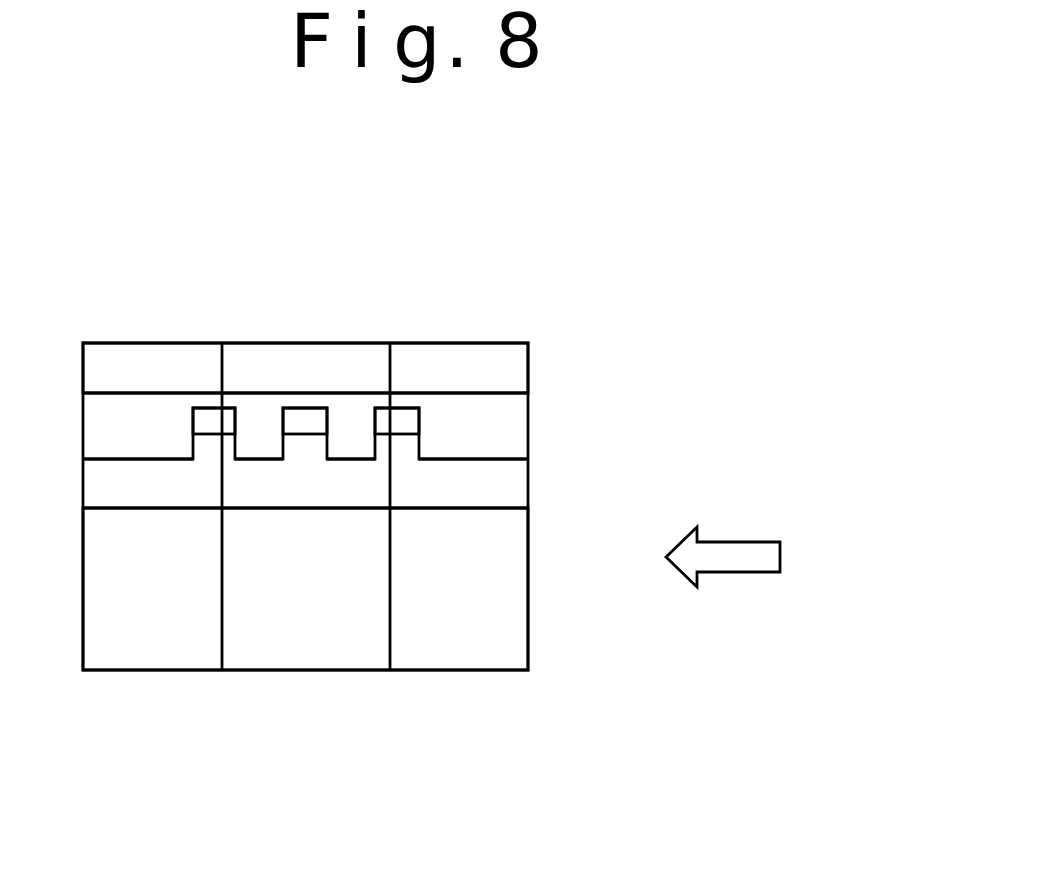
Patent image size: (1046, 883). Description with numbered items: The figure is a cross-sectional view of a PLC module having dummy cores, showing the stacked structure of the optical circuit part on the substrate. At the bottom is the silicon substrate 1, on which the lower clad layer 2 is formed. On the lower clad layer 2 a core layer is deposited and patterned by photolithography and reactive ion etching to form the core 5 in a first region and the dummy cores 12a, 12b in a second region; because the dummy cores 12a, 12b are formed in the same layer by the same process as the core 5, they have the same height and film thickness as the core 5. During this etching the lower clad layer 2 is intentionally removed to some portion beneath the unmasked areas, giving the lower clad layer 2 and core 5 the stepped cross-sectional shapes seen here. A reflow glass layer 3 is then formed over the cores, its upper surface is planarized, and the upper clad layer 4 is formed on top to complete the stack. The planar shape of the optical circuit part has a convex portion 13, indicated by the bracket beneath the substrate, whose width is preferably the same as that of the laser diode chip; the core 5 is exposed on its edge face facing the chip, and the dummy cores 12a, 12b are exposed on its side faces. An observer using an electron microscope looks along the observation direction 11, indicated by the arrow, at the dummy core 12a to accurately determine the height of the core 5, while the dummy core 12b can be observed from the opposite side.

The silicon substrate 1 is at (518, 600).
The lower clad layer 2 is at (512, 487).
The reflow glass layer 3 is at (512, 433).
The upper clad layer 4 is at (512, 373).
The core 5 is at (305, 416).
The observation direction 11 is at (780, 555).
The dummy core 12a is at (409, 416).
The dummy core 12b is at (202, 416).
The convex portion 13 is at (392, 673).